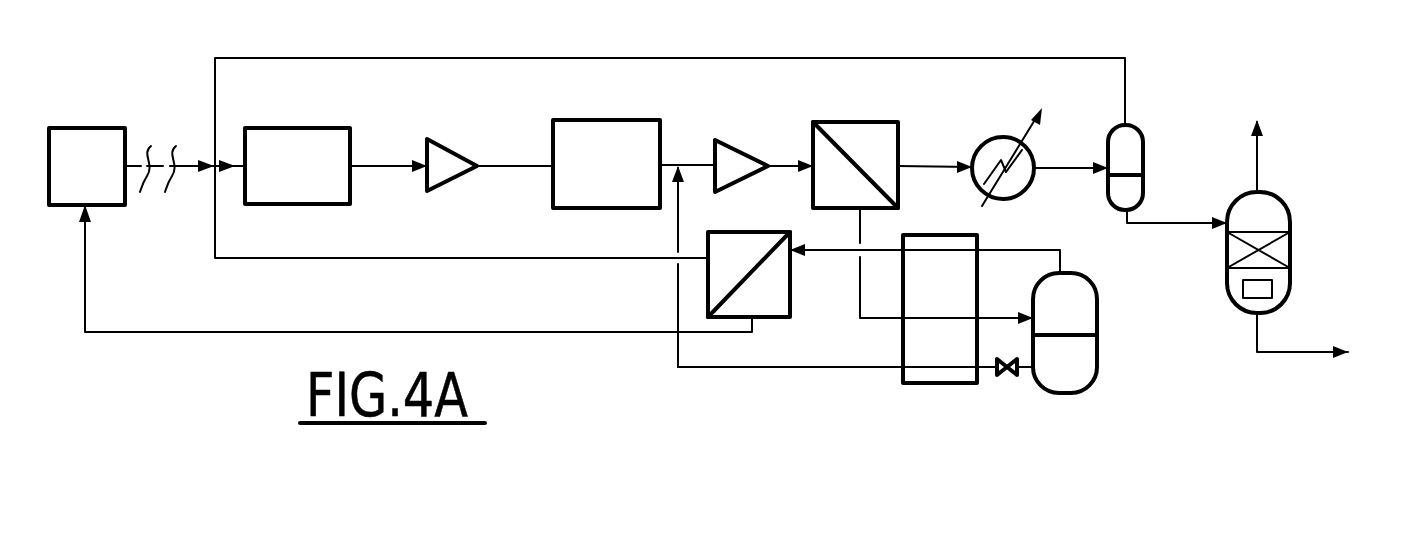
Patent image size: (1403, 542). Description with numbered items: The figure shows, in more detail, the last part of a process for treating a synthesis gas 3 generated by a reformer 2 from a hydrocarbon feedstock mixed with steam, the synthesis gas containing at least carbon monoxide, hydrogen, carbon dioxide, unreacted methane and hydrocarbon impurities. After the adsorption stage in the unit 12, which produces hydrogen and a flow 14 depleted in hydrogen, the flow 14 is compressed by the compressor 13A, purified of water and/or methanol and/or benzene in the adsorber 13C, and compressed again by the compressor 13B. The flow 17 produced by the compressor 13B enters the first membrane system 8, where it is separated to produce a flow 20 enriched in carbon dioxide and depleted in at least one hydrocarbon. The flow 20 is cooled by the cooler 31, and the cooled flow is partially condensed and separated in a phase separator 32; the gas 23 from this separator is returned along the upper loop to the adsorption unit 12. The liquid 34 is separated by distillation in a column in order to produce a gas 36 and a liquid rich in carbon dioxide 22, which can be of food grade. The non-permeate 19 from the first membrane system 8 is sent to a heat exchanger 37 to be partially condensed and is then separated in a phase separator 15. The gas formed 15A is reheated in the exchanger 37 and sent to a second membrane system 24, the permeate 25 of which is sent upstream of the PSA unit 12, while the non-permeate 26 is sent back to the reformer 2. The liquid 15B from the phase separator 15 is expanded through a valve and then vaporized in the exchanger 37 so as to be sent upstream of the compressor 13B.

The reformer 2 is at (70, 128).
The synthesis gas 3 is at (170, 154).
The adsorption unit 12 is at (272, 140).
The flow depleted in hydrogen 14 is at (381, 158).
The compressor 13A is at (453, 148).
The adsorber 13C is at (577, 135).
The compressor 13B is at (742, 142).
The flow produced by the compressor 17 is at (783, 162).
The first membrane system 8 is at (860, 130).
The flow enriched in CO2 20 is at (924, 165).
The cooler 31 is at (1000, 137).
The gas 23 is at (1068, 58).
The phase separator 32 is at (1143, 141).
The liquid 34 is at (1153, 223).
The gas 36 is at (1257, 166).
The non-permeate 26 is at (447, 258).
The permeate 25 is at (338, 332).
The second membrane system 24 is at (770, 317).
The gas formed 15A is at (820, 252).
The non-permeate 19 is at (856, 308).
The liquid 15B is at (805, 368).
The heat exchanger 37 is at (951, 384).
The phase separator 15 is at (1082, 393).
The liquid rich in carbon dioxide 22 is at (1303, 352).